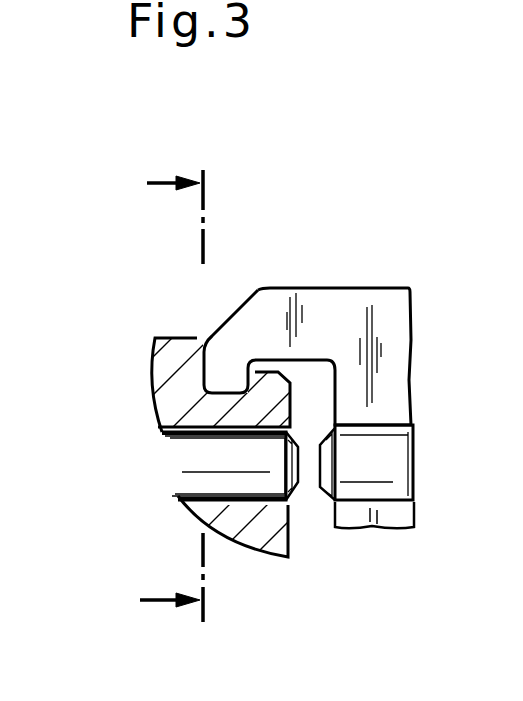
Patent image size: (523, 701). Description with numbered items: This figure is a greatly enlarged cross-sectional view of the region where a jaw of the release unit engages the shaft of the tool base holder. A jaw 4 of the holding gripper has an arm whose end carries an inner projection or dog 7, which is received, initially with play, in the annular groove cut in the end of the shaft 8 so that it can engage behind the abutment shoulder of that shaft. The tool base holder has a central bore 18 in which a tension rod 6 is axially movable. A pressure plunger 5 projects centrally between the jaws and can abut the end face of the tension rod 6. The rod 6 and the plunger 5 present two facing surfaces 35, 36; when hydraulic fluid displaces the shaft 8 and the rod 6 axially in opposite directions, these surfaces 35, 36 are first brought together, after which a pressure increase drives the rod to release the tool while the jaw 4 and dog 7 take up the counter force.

The jaws 4 is at (330, 313).
The pressure plunger 5 is at (358, 473).
The tension rod 6 is at (255, 472).
The dogs 7 is at (228, 370).
The shaft 8 is at (183, 358).
The central bore 18 is at (190, 487).
The surface 35 is at (308, 445).
The surface 36 is at (303, 472).